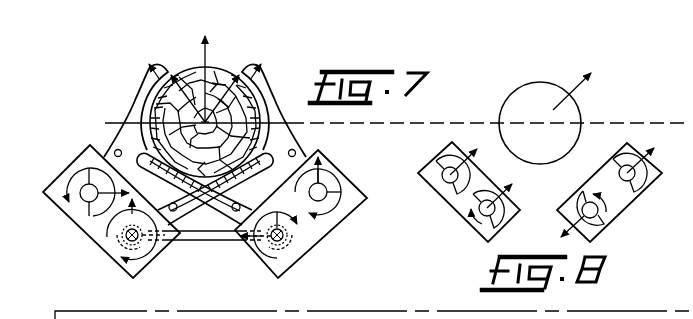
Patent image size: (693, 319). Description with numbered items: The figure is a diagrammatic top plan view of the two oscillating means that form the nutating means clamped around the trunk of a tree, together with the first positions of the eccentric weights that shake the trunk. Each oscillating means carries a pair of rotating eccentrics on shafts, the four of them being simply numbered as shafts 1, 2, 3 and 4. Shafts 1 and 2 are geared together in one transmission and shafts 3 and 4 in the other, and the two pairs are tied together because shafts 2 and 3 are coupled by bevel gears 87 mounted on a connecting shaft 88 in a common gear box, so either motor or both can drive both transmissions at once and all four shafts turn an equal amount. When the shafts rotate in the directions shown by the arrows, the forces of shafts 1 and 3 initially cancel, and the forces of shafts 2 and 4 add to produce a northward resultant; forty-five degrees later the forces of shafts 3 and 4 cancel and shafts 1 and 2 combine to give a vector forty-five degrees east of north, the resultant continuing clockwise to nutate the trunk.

In FIG. 7, the eccentric and shaft 1 is at (85, 199).
In FIG. 7, the eccentric and shaft 2 is at (126, 238).
In FIG. 8, the eccentric and shaft 2 is at (545, 118).
In FIG. 7, the eccentric and shaft 3 is at (290, 243).
In FIG. 7, the eccentric and shaft 4 is at (324, 197).
In FIG. 7, the bevel gears 87 is at (150, 250).
In FIG. 7, the connecting shaft 88 is at (207, 242).